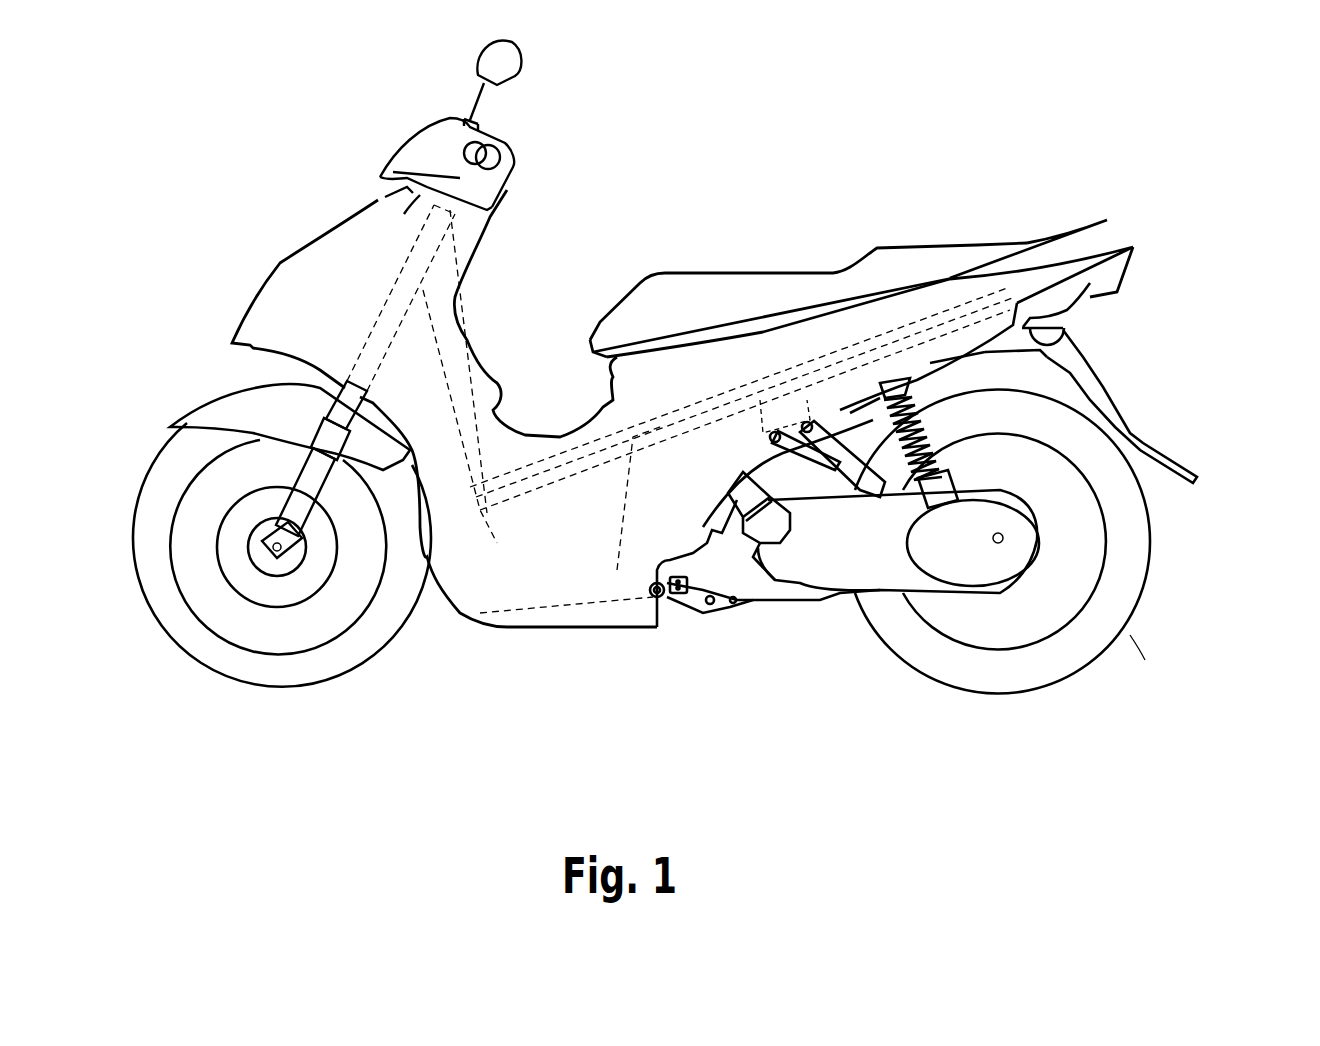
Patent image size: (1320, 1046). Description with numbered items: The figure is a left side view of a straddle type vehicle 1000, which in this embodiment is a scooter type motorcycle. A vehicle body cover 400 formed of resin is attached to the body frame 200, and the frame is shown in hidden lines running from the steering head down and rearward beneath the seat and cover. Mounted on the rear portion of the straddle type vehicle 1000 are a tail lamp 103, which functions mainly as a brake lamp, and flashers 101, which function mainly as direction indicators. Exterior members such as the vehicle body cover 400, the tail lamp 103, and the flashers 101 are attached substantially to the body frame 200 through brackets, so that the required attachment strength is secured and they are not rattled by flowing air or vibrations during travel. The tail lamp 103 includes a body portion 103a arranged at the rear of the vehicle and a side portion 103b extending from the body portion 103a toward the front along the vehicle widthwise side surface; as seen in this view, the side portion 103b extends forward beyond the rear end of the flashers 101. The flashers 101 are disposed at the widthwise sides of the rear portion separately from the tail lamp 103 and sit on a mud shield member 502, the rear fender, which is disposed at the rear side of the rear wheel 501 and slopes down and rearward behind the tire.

The straddle type vehicle 1000 is at (612, 157).
The vehicle body cover 400 is at (723, 360).
The body frame 200 is at (587, 437).
The tail lamp 103 is at (1138, 242).
The side portion 103b is at (1076, 285).
The body portion 103a is at (1123, 278).
The flasher 101 is at (1080, 313).
The mud shield member 502 is at (1137, 420).
The rear wheel 501 is at (1117, 637).